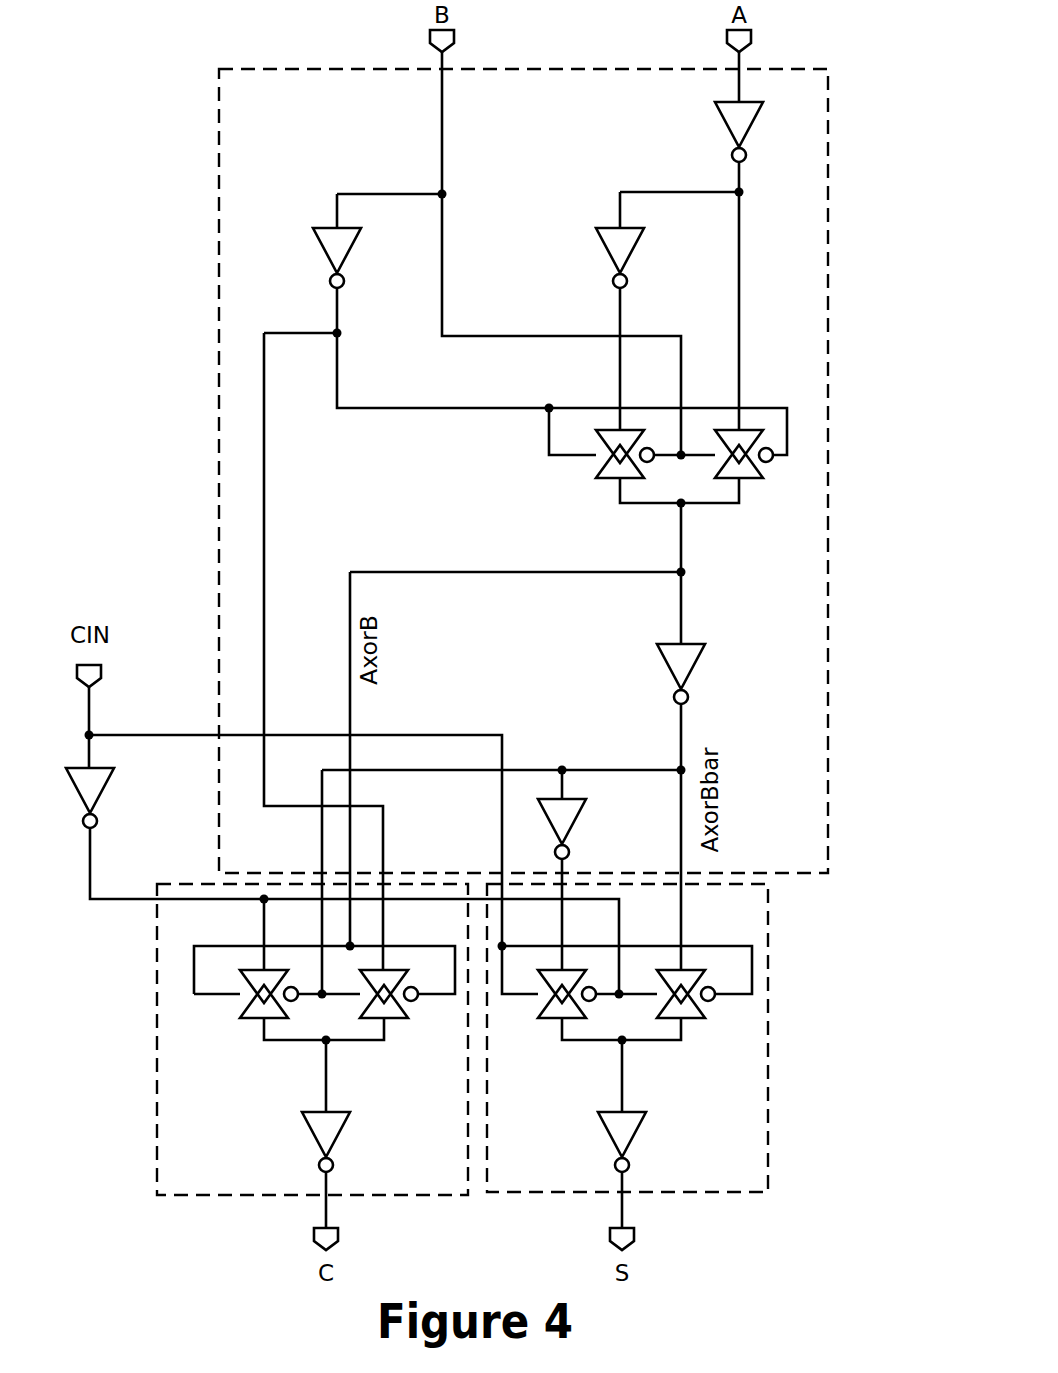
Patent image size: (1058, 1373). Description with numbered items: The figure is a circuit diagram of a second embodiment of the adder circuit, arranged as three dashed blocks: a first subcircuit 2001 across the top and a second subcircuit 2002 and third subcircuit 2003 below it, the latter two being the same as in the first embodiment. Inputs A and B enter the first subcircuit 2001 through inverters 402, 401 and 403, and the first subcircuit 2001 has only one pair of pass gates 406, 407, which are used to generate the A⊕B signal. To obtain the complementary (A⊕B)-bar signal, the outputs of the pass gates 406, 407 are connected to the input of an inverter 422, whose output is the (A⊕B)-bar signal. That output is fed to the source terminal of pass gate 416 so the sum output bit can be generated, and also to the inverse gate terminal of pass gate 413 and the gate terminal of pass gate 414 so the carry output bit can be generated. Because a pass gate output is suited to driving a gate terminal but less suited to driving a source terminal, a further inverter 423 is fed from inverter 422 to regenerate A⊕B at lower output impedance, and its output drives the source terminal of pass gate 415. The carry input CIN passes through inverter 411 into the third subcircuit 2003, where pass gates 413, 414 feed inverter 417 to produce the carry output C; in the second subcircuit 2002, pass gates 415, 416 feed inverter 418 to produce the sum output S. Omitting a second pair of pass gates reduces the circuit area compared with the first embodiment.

The inverter 401 is at (318, 250).
The inverter 402 is at (716, 115).
The inverter 403 is at (632, 253).
The pass gate 406 is at (603, 478).
The pass gate 407 is at (755, 478).
The inverter 411 is at (108, 778).
The pass gate 413 is at (258, 1018).
The pass gate 414 is at (397, 1018).
The pass gate 415 is at (555, 1018).
The pass gate 416 is at (693, 1018).
The inverter 417 is at (343, 1127).
The inverter 418 is at (640, 1127).
The inverter 422 is at (698, 662).
The inverter 423 is at (568, 833).
The first subcircuit 2001 is at (829, 200).
The second subcircuit 2002 is at (768, 1000).
The third subcircuit 2003 is at (153, 1083).